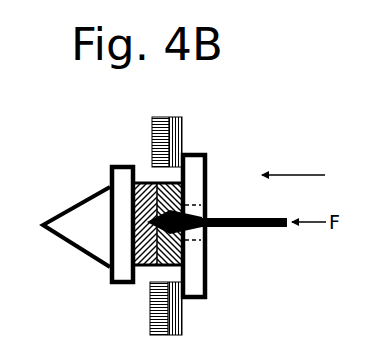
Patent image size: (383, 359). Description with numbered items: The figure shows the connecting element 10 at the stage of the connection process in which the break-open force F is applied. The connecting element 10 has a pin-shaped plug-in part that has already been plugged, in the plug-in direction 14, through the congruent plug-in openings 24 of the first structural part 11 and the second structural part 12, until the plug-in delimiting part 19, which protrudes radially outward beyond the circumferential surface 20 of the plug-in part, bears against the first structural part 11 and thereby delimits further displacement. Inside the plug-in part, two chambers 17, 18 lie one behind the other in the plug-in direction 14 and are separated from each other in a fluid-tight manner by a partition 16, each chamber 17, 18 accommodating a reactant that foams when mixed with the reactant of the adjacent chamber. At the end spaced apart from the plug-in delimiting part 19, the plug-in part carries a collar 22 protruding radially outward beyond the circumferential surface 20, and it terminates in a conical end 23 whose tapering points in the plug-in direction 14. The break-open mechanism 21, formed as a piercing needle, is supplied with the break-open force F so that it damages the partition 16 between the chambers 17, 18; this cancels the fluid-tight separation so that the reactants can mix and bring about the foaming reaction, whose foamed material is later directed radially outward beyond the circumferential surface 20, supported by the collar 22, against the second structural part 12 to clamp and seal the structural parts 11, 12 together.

The connecting element 10 is at (64, 262).
The first structural part 11 is at (182, 135).
The second structural part 12 is at (160, 176).
The plug-in direction 14 is at (293, 162).
The partition 16 is at (154, 266).
The chamber 17 is at (187, 178).
The chamber 18 is at (136, 166).
The plug-in delimiting part 19 is at (195, 267).
The circumferential surface 20 is at (142, 268).
The break-open mechanism 21 is at (269, 228).
The collar 22 is at (113, 283).
The conical end 23 is at (88, 236).
The plug-in opening 24 is at (138, 181).